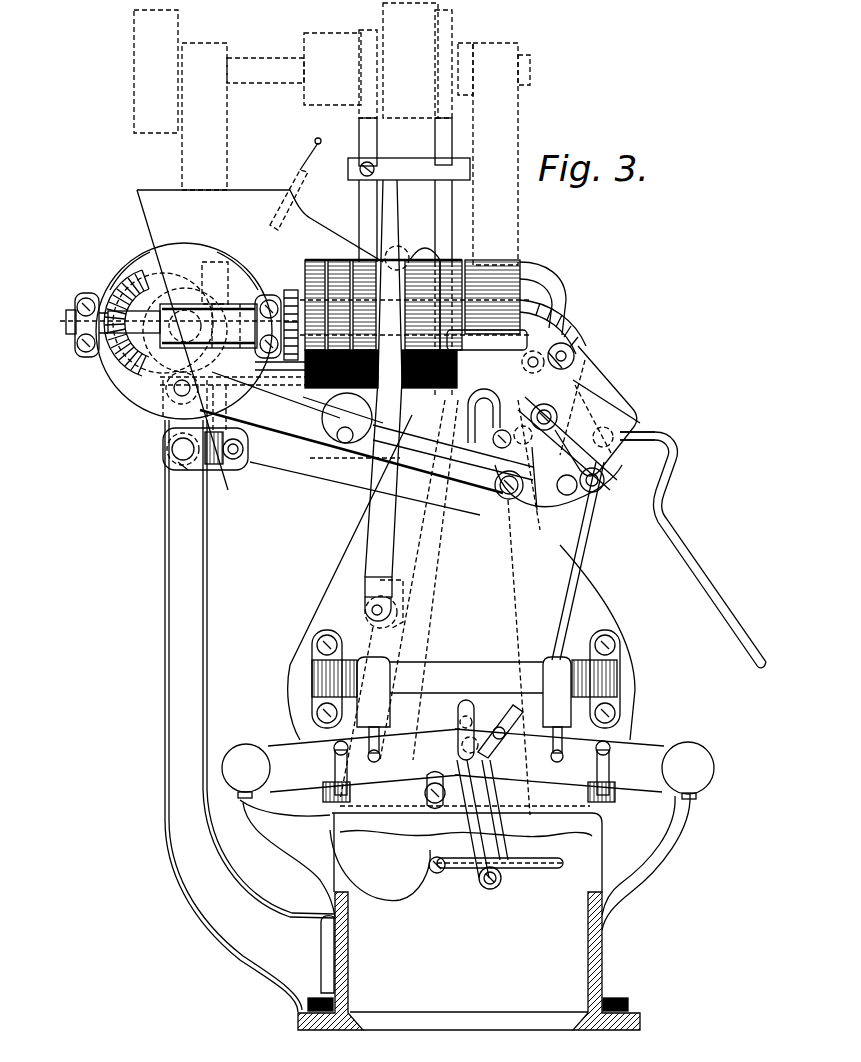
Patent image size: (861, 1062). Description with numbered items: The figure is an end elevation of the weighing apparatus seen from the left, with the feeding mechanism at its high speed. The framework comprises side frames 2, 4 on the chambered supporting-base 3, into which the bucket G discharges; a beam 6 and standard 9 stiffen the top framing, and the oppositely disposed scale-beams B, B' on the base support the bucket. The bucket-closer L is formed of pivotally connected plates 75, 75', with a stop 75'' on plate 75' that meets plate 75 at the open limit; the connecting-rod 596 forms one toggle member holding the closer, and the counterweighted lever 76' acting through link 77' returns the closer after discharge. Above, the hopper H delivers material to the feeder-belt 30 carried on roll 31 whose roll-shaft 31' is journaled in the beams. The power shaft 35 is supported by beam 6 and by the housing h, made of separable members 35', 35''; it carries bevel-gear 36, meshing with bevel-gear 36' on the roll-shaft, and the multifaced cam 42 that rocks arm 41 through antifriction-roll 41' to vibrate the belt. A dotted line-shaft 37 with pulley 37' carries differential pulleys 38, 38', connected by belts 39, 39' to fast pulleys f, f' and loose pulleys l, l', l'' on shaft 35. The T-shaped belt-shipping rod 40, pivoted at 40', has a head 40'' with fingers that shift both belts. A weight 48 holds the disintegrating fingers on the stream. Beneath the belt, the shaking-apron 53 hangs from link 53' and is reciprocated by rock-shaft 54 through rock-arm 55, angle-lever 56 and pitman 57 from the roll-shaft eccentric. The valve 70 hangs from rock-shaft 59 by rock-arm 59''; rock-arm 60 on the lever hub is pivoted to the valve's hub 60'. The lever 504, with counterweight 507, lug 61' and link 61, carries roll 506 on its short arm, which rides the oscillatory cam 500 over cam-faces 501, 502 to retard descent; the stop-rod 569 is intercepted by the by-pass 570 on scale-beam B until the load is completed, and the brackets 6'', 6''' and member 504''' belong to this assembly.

The side frame 2 is at (447, 567).
The chambered supporting-base 3 is at (602, 948).
The side frame 4 is at (557, 815).
The beam 6 is at (420, 313).
The cylinder bracket 6'' is at (552, 298).
The curved guide 6''' is at (560, 325).
The standard 9 is at (207, 607).
The feeder-belt 30 is at (290, 396).
The roll 31 is at (200, 314).
The roll-shaft 31' is at (231, 283).
The power shaft 35 is at (164, 325).
The housing member 35' is at (237, 254).
The housing member 35'' is at (126, 251).
The bevel-gear 36 is at (110, 327).
The bevel-gear 36' is at (146, 340).
The line-shaft 37 is at (243, 112).
The pulley 37' is at (175, 71).
The differential pulley 38 is at (456, 134).
The differential pulley 38' is at (332, 57).
The belt 39 is at (468, 202).
The belt 39' is at (390, 146).
The belt-shipping rod 40 is at (362, 404).
The pivot 40' is at (331, 689).
The head 40'' is at (409, 156).
The arm 41 is at (267, 357).
The antifriction-roll 41' is at (232, 390).
The multifaced cam 42 is at (291, 290).
The weight 48 is at (432, 247).
The shaking-apron 53 is at (365, 481).
The link 53' is at (453, 446).
The rock-shaft 54 is at (172, 450).
The rock-arm 55 is at (166, 418).
The angle-lever 56 is at (230, 455).
The pitman 57 is at (212, 456).
The rock-shaft 59 is at (560, 427).
The rock-arm 59'' is at (584, 355).
The rock-arm 60 is at (567, 443).
The hub 60' is at (552, 414).
The link 61 is at (482, 405).
The lug 61' is at (494, 421).
The valve 70 is at (556, 443).
The closer plate 75 is at (387, 836).
The closer plate 75' is at (500, 881).
The stop 75'' is at (428, 886).
The counterweighted lever 76' is at (295, 898).
The link 77' is at (482, 819).
The oscillatory cam 500 is at (598, 378).
The cam-face 501 is at (637, 432).
The cam-face 502 is at (626, 410).
The lever 504 is at (475, 486).
The rod 504''' is at (495, 657).
The antifriction-roll 506 is at (605, 482).
The counterweight 507 is at (345, 443).
The stop-rod 569 is at (695, 556).
The by-pass 570 is at (466, 696).
The connecting-rod 596 is at (582, 572).
The scale-beam B is at (584, 765).
The scale-beam B' is at (341, 772).
The bucket G is at (461, 577).
The hopper H is at (260, 314).
The bucket-closer L is at (496, 879).
The fast pulley f is at (451, 291).
The fast pulley f' is at (339, 294).
The shaft housing h is at (184, 329).
The loose pulley l is at (422, 287).
The loose pulley l' is at (381, 286).
The loose pulley l'' is at (315, 289).